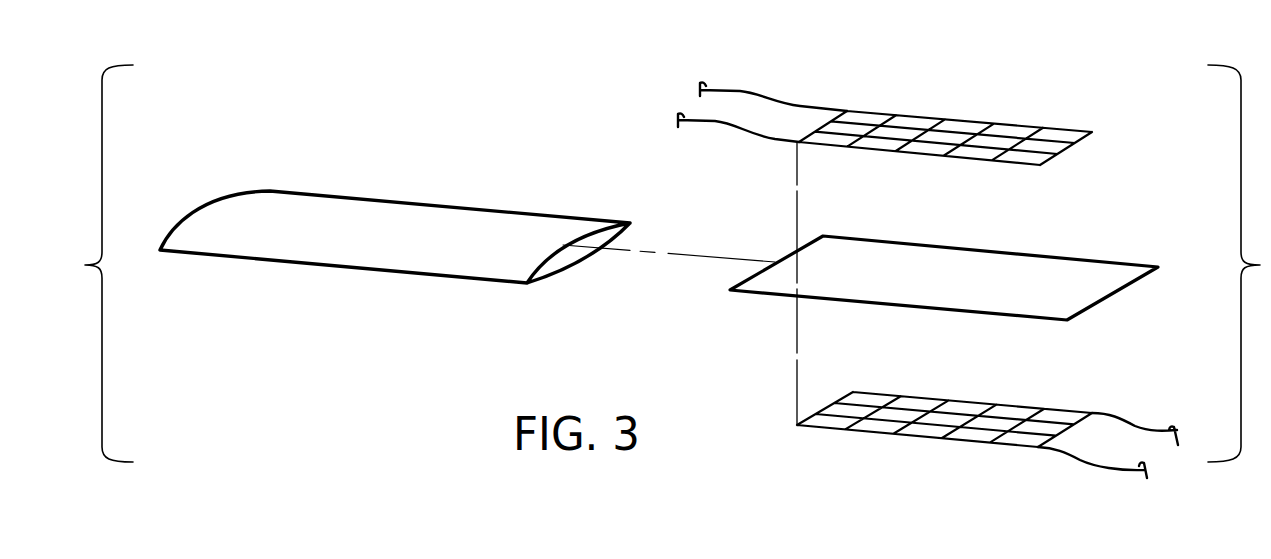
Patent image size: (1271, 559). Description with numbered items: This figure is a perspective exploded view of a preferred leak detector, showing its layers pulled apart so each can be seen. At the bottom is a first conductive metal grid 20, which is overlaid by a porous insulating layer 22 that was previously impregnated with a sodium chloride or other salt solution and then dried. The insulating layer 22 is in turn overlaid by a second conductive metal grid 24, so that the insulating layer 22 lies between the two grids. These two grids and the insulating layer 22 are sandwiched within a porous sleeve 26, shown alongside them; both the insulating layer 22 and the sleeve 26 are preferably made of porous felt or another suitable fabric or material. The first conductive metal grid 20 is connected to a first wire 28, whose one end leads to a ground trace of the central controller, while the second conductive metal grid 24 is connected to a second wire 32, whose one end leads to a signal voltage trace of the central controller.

The first conductive metal grid 20 is at (1018, 403).
The porous insulating layer 22 is at (997, 262).
The second conductive metal grid 24 is at (973, 118).
The porous sleeve 26 is at (300, 203).
The first wire 28 is at (1157, 430).
The second wire 32 is at (730, 88).